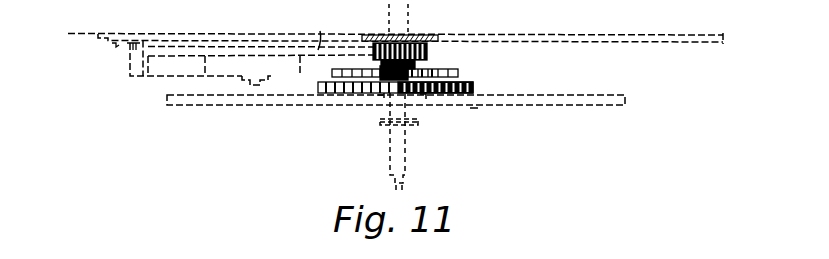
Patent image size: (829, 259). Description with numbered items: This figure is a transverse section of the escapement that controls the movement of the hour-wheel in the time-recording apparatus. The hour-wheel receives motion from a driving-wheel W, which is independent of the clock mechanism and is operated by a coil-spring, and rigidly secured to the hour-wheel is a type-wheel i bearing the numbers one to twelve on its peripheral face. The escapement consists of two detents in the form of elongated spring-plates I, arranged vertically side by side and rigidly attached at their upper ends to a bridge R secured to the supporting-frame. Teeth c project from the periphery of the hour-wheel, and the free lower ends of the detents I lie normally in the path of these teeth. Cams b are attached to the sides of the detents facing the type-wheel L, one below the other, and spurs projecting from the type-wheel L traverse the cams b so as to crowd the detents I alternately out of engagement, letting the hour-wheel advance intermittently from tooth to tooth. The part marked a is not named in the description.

The driving-wheel W is at (311, 32).
The bridge R is at (436, 30).
The detent I is at (425, 61).
The disc a is at (460, 73).
The teeth c is at (420, 69).
The type-wheel i is at (475, 88).
The cam b is at (376, 105).
The type-wheel L is at (475, 120).